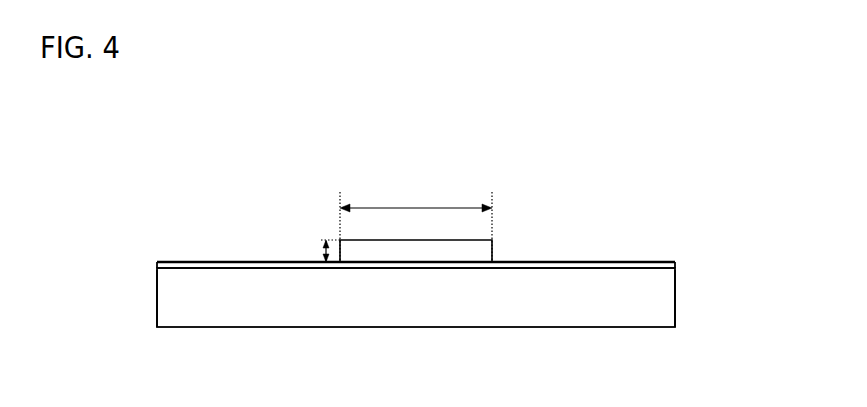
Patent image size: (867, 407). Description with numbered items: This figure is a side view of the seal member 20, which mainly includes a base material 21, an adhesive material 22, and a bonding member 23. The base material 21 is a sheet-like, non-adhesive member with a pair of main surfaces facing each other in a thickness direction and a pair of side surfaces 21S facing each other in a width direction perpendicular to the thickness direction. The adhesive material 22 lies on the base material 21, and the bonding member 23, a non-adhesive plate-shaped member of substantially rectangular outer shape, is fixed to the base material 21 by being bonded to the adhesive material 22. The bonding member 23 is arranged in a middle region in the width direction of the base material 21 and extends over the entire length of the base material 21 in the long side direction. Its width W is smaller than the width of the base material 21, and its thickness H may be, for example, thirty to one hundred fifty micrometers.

The seal member 20 is at (227, 178).
The base material 21 is at (428, 308).
The side surfaces 21S is at (157, 291).
The adhesive material 22 is at (608, 266).
The bonding member 23 is at (486, 256).